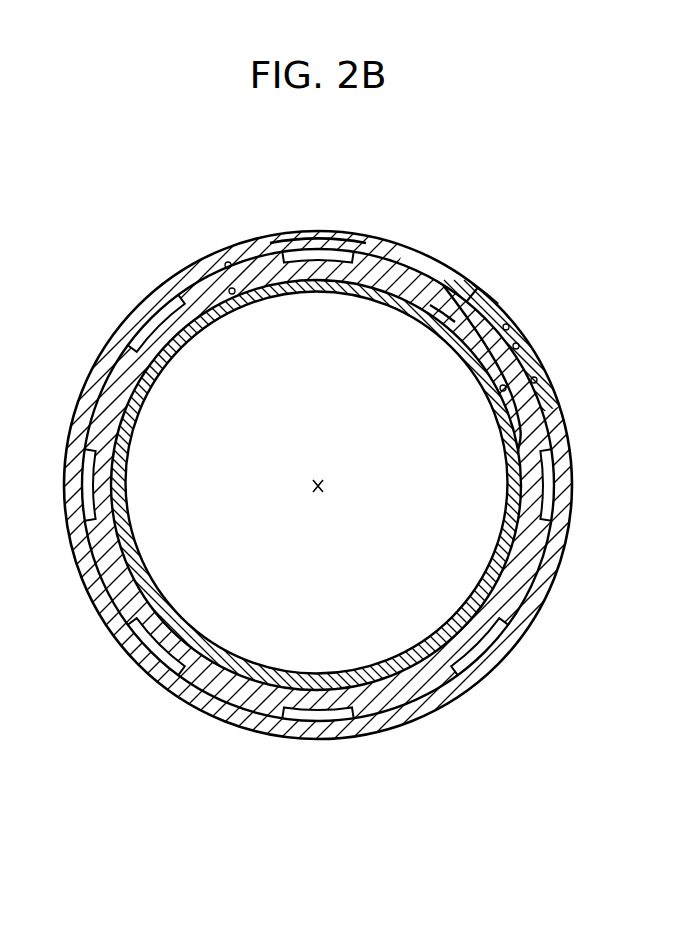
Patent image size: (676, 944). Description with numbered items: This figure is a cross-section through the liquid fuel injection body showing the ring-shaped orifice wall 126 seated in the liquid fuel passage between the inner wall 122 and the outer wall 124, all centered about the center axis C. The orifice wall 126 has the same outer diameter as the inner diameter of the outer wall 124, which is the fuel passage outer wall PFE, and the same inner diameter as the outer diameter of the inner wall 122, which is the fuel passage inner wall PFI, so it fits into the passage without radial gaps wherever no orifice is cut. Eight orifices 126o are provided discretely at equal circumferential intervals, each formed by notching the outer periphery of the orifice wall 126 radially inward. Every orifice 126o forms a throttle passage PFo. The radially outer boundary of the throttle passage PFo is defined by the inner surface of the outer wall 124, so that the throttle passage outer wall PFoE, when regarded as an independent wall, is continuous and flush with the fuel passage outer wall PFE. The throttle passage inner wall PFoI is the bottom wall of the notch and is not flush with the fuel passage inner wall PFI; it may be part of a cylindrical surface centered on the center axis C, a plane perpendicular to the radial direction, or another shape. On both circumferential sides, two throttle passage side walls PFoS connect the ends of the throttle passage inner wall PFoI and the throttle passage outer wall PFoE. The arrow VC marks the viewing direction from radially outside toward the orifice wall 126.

The orifice wall 126 is at (432, 262).
The outer wall 124 is at (556, 401).
The inner wall 122 is at (507, 421).
The orifice 126o is at (332, 253).
The arrow VC is at (317, 214).
The fuel passage outer wall PFE is at (226, 262).
The fuel passage inner wall PFI is at (233, 294).
The throttle passage side wall PFoS is at (472, 284).
The throttle passage PFo is at (480, 312).
The throttle passage outer wall PFoE is at (509, 325).
The throttle passage inner wall PFoI is at (452, 322).
The center axis C is at (333, 490).